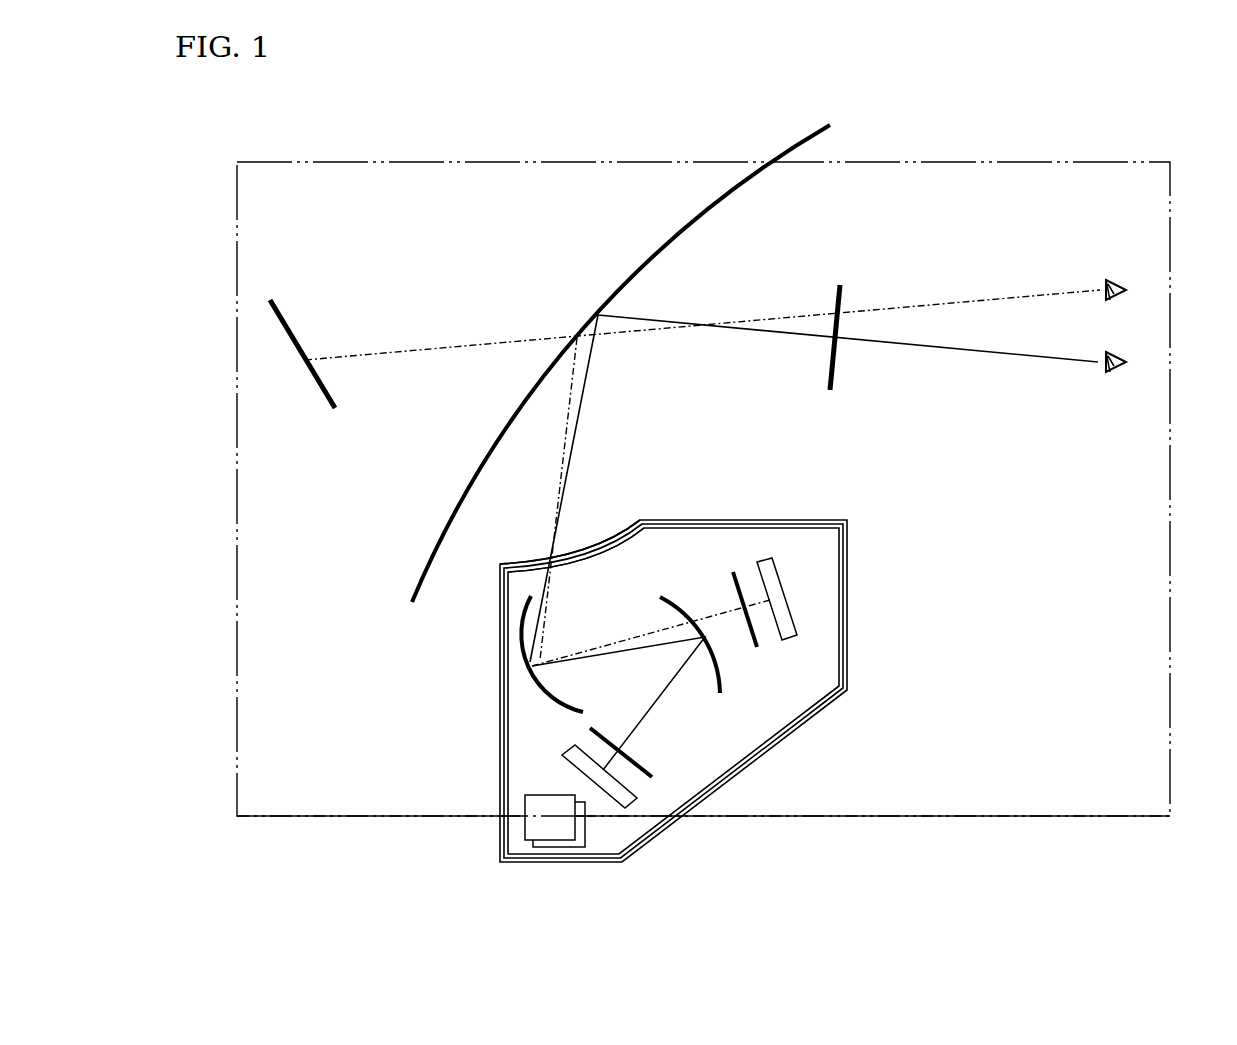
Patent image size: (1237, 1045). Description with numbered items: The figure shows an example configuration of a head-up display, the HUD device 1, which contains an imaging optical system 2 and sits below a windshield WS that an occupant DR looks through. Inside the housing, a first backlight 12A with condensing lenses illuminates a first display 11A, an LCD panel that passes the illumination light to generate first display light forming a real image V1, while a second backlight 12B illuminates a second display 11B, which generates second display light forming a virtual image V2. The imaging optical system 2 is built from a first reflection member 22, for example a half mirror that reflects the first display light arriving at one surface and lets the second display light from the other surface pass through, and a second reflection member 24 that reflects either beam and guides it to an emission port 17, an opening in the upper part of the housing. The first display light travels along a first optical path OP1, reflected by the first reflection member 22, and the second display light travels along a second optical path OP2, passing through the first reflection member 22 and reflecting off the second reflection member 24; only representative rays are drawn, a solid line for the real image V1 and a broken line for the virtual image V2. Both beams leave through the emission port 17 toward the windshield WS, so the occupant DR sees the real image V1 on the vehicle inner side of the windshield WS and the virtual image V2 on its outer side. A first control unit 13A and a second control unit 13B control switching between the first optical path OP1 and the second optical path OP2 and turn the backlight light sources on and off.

The HUD device 1 is at (780, 853).
The imaging optical system 2 is at (1016, 818).
The windshield WS is at (672, 233).
The occupant DR is at (1126, 322).
The real image V1 is at (838, 292).
The virtual image V2 is at (281, 318).
The first optical path OP1 is at (586, 376).
The second optical path OP2 is at (566, 430).
The emission port 17 is at (594, 549).
The first reflection member 22 is at (667, 596).
The second reflection member 24 is at (570, 700).
The first display 11A is at (641, 766).
The second display 11B is at (758, 650).
The first backlight 12A is at (563, 752).
The second backlight 12B is at (785, 586).
The first control unit 13A is at (543, 857).
The second control unit 13B is at (587, 840).